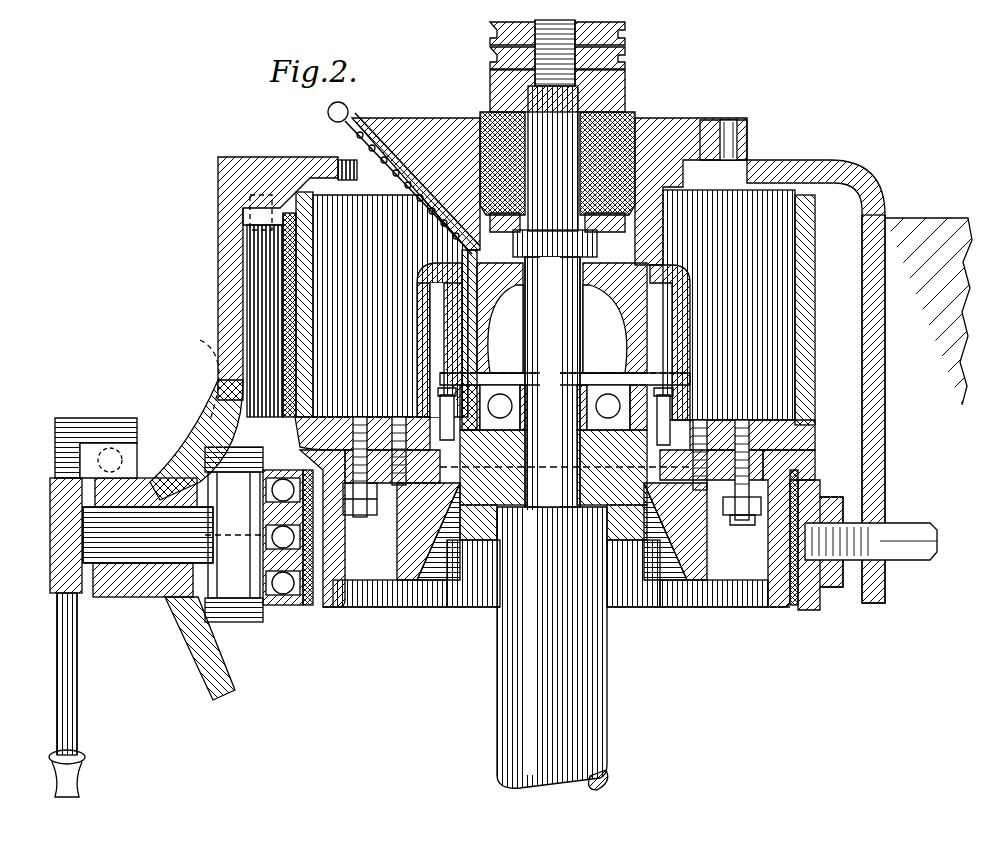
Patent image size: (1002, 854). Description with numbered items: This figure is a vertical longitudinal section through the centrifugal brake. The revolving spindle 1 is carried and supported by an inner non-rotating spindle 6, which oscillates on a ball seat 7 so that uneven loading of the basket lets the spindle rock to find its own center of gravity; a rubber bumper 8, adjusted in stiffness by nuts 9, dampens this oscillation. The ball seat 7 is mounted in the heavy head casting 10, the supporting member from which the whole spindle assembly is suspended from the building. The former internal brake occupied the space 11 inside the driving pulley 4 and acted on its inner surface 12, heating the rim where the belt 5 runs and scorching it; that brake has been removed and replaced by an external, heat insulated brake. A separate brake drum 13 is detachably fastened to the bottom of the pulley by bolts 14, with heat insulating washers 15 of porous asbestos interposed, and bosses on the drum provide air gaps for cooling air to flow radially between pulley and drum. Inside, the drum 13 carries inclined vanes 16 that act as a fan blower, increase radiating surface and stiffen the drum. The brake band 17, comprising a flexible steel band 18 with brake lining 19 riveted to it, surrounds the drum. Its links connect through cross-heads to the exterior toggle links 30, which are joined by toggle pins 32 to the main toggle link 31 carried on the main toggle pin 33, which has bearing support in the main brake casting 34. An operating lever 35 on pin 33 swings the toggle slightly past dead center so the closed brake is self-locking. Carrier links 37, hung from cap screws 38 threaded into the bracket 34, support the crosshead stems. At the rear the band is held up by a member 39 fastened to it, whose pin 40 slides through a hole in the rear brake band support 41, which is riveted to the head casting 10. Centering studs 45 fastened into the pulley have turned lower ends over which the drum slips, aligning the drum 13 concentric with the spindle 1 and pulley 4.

The revolving spindle 1 is at (552, 648).
The driving pulley 4 is at (806, 296).
The belt 5 is at (925, 237).
The inner non-rotating spindle 6 is at (610, 322).
The ball seat 7 is at (622, 300).
The rubber bumper 8 is at (633, 118).
The nuts 9 is at (625, 53).
The head casting 10 is at (445, 122).
The space inside the driving pulley 11 is at (729, 305).
The inner surface of the pulley 12 is at (795, 337).
The brake drum 13 is at (336, 612).
The bolts 14 is at (390, 582).
The heat insulating washers 15 is at (306, 450).
The vanes 16 is at (432, 568).
The brake band 17 is at (790, 569).
The flexible steel band 18 is at (305, 605).
The brake lining 19 is at (308, 608).
The exterior toggle link 30 is at (185, 425).
The main toggle link 31 is at (232, 460).
The toggle pin 32 is at (172, 442).
The main toggle pin 33 is at (130, 598).
The main brake casting 34 is at (263, 160).
The operating lever 35 is at (78, 730).
The carrier links 37 is at (200, 342).
The cap screws 38 is at (230, 213).
The rear brake band support member 39 is at (843, 510).
The pin 40 is at (915, 530).
The rear brake band support 41 is at (872, 468).
The centering studs 45 is at (398, 418).